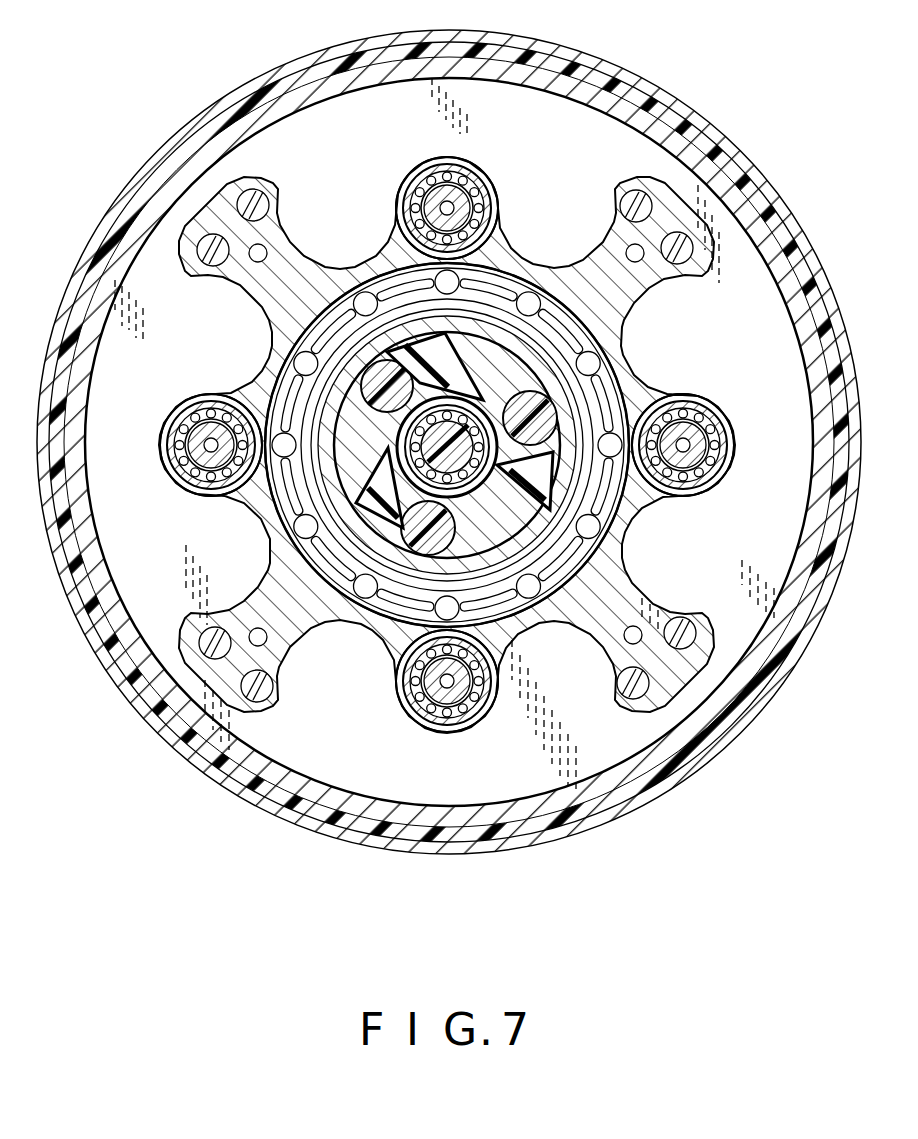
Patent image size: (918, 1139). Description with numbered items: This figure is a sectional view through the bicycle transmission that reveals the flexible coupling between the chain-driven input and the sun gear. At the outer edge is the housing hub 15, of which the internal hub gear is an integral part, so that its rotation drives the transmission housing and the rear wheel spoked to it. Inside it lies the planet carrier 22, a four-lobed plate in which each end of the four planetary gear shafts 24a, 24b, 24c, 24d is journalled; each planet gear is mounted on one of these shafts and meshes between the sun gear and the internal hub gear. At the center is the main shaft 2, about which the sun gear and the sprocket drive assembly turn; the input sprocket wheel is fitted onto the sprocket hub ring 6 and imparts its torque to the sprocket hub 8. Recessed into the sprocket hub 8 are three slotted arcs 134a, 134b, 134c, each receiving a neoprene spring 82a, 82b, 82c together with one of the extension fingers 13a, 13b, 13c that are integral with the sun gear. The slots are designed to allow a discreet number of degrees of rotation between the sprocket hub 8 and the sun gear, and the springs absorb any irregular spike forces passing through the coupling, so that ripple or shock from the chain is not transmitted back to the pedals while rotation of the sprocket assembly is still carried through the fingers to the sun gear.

The main shaft 2 is at (528, 610).
The sprocket hub ring 6 is at (559, 612).
The sprocket hub 8 is at (547, 325).
The extension finger 13a is at (627, 525).
The extension finger 13b is at (343, 615).
The extension finger 13c is at (452, 322).
The housing hub 15 is at (468, 40).
The planet carrier 22 is at (262, 185).
The planetary gear shaft 24a is at (458, 196).
The planetary gear shaft 24b is at (684, 428).
The planetary gear shaft 24c is at (440, 705).
The planetary gear shaft 24d is at (222, 400).
The neoprene spring 82a is at (575, 380).
The neoprene spring 82b is at (392, 625).
The neoprene spring 82c is at (333, 297).
The slotted arc 134a is at (540, 408).
The slotted arc 134b is at (398, 524).
The slotted arc 134c is at (490, 296).